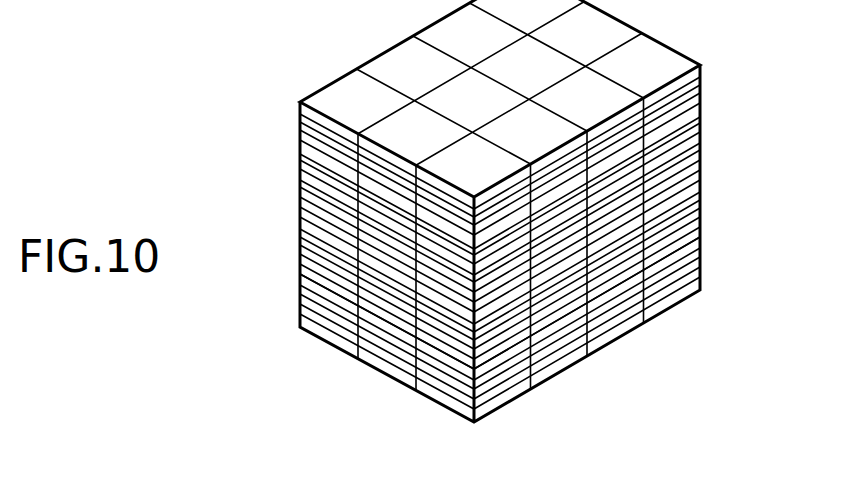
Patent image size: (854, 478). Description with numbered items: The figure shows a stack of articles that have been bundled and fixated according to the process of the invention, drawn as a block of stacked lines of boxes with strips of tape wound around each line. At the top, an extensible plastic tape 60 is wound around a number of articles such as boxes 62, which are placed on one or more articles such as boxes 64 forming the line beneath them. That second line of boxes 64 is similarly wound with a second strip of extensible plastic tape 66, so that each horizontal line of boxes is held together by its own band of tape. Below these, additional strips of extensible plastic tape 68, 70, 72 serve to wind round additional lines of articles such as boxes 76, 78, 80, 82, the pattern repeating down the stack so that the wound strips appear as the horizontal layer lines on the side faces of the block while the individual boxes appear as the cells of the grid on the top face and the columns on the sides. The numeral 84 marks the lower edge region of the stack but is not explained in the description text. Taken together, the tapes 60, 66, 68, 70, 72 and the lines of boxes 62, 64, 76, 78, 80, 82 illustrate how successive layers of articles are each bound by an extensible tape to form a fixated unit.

The extensible plastic tape 60 is at (308, 125).
The boxes 62 is at (450, 157).
The boxes 64 is at (310, 180).
The second strip of extensible plastic tape 66 is at (305, 162).
The strip of extensible plastic tape 68 is at (310, 207).
The strip of extensible plastic tape 70 is at (307, 237).
The strip of extensible plastic tape 72 is at (307, 278).
The boxes 76 is at (633, 212).
The boxes 78 is at (632, 250).
The boxes 80 is at (307, 295).
The boxes 82 is at (423, 398).
The bottom edge layer 84 is at (303, 328).